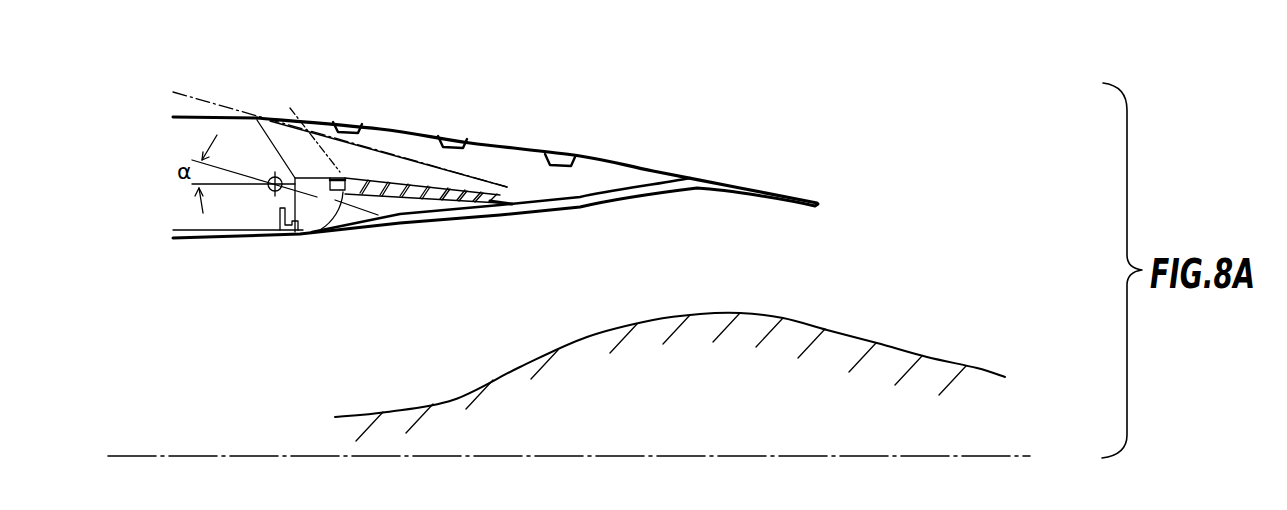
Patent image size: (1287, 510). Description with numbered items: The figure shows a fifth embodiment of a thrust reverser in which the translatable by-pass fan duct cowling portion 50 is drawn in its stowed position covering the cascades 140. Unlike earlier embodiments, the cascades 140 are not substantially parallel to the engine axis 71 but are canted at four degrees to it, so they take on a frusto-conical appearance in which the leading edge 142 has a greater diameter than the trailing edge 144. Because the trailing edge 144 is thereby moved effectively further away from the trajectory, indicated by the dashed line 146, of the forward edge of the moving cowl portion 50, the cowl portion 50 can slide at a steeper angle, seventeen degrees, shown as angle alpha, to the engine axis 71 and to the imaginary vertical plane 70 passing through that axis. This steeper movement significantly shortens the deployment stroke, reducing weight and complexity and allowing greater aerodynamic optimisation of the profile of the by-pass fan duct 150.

The translatable by-pass fan duct cowling portion 50 is at (655, 169).
The cascades 140 is at (388, 178).
The leading edge 142 is at (329, 193).
The trailing edge 144 is at (505, 188).
The dashed line 146 is at (481, 185).
The by-pass fan duct 150 is at (699, 260).
The imaginary vertical plane 70 is at (822, 455).
The engine axis 71 is at (569, 435).